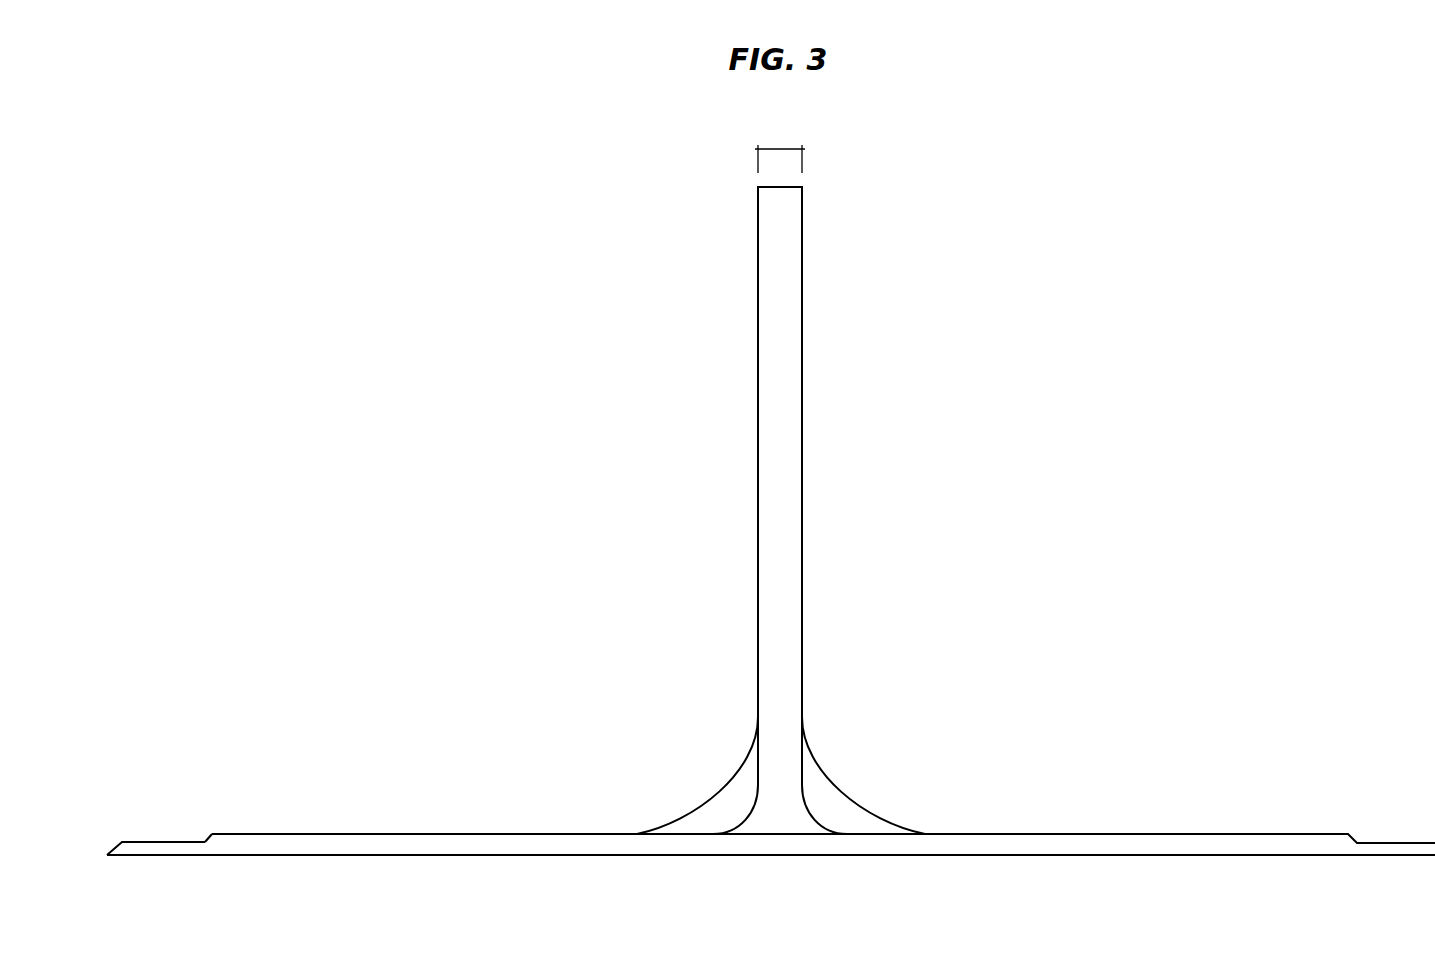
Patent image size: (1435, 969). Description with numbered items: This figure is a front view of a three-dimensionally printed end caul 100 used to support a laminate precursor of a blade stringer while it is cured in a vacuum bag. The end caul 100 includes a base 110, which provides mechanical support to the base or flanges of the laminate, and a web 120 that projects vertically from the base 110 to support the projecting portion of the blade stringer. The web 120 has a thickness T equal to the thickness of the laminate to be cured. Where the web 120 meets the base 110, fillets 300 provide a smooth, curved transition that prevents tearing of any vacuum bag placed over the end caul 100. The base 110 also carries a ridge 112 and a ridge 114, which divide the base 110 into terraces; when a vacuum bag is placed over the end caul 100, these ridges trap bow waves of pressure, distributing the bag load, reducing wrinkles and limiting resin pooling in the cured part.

The end caul 100 is at (348, 436).
The base 110 is at (1220, 766).
The ridge 112 is at (208, 833).
The ridge 114 is at (123, 840).
The web 120 is at (912, 395).
The fillets 300 is at (716, 790).